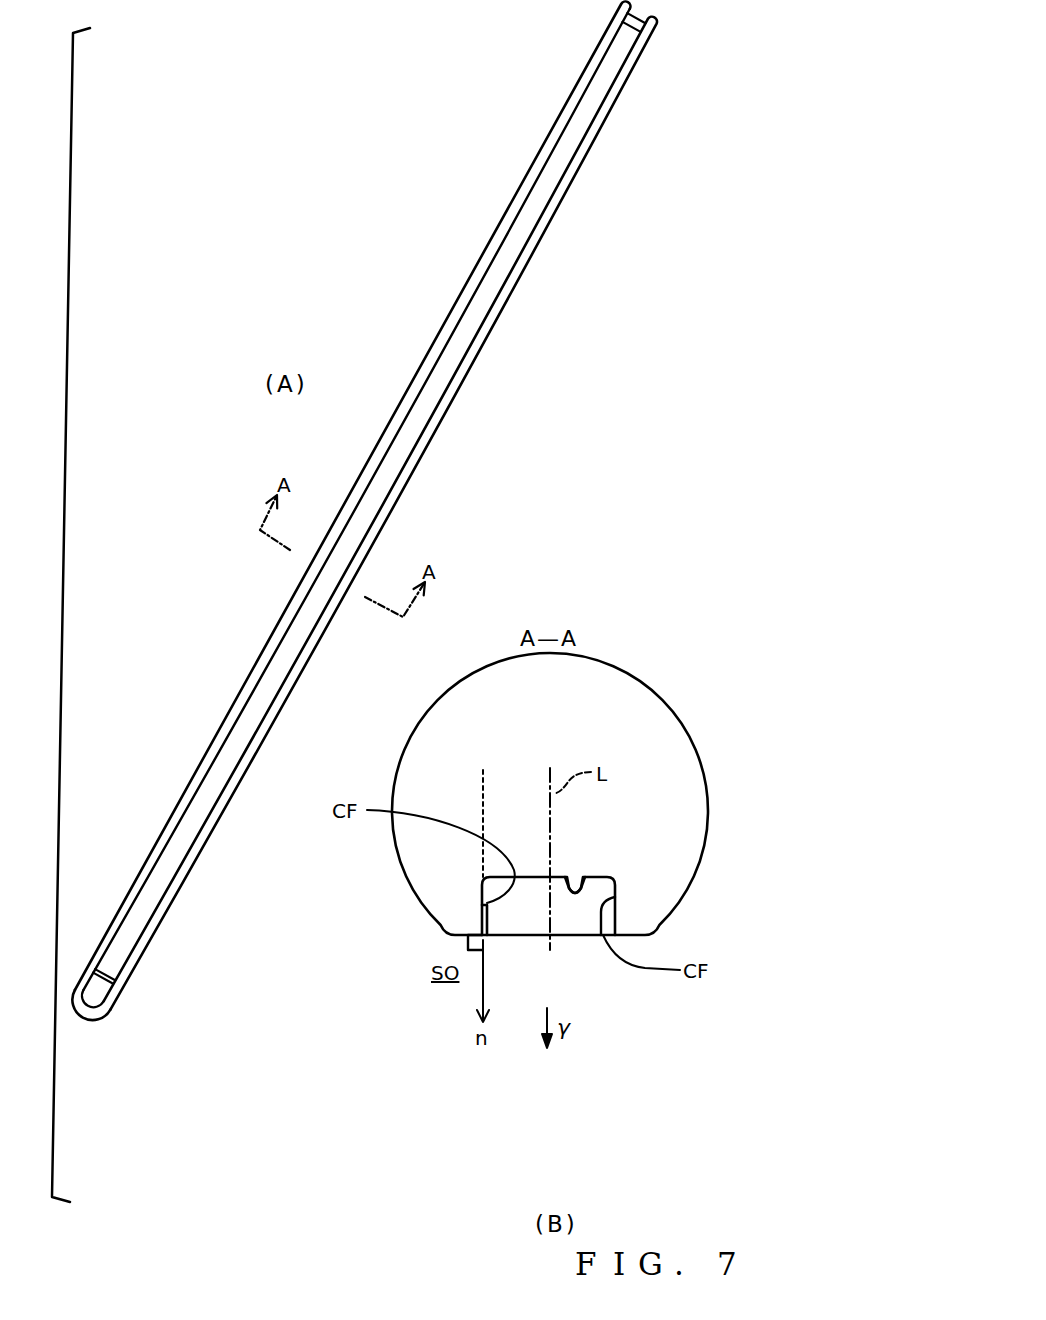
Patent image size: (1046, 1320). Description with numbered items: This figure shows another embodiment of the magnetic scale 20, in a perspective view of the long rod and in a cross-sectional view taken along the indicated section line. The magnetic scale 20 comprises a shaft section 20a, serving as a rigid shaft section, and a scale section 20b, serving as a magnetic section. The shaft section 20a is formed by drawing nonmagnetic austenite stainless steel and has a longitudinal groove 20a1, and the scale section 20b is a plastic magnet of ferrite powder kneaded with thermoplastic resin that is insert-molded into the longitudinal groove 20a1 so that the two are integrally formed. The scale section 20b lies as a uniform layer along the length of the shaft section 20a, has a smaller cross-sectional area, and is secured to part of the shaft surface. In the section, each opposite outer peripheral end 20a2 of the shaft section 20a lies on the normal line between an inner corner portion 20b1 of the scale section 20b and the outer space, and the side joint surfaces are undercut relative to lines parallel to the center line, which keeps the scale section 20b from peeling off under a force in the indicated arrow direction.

The magnetic scale 20 is at (434, 510).
The shaft section 20a is at (431, 443).
The scale section 20b is at (442, 375).
The longitudinal groove 20a1 is at (144, 920).
The inner corner portion 20b1 is at (482, 903).
The outer peripheral end 20a2 is at (485, 921).